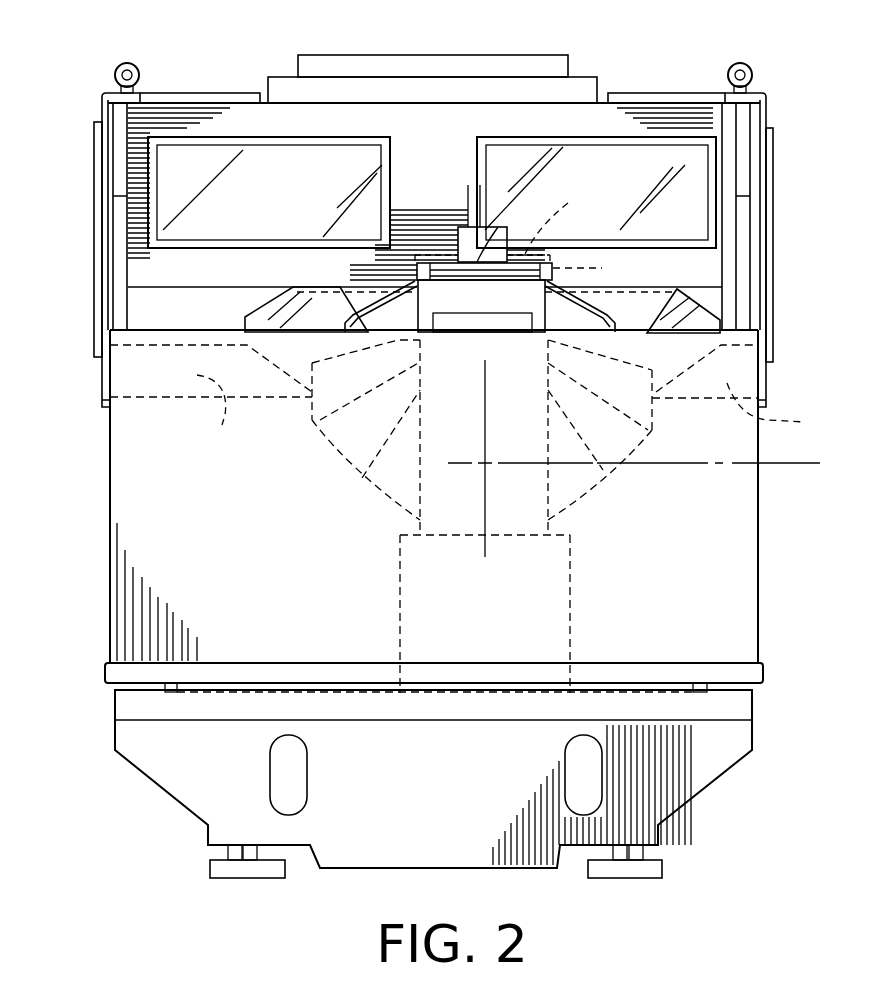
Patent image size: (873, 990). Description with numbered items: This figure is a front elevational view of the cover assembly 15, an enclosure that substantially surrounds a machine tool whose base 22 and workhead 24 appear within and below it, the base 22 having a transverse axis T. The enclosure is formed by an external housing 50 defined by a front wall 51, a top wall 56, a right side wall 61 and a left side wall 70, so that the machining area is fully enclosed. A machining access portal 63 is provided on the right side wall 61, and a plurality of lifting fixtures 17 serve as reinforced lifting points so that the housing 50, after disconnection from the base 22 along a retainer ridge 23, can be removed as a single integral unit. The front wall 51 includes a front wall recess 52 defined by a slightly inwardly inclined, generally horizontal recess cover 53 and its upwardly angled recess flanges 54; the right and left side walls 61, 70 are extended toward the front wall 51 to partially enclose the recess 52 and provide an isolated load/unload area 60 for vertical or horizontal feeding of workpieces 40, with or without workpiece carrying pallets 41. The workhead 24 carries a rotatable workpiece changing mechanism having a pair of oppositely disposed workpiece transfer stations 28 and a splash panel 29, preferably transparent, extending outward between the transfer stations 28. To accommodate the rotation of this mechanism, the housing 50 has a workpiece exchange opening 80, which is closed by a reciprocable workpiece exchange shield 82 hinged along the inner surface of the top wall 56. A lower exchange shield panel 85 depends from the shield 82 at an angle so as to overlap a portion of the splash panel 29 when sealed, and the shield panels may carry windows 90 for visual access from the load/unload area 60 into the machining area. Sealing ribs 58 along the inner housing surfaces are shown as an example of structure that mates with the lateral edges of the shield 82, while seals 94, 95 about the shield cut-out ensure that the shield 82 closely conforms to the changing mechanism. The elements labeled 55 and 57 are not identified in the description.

The cover assembly 15 is at (784, 195).
The lifting fixtures 17 is at (122, 63).
The base 22 is at (738, 700).
The retainer ridge 23 is at (758, 662).
The workhead 24 is at (540, 520).
The workpiece transfer stations 28 is at (556, 240).
The splash panel 29 is at (313, 307).
The workpieces 40 is at (468, 227).
The workpiece carrying pallets 41 is at (485, 228).
The external housing 50 is at (88, 154).
The front wall 51 is at (135, 498).
The front wall recess 52 is at (730, 297).
The recess cover 53 is at (110, 390).
The recess flanges 54 is at (511, 411).
The support frame 55 is at (427, 303).
The top wall 56 is at (243, 93).
The cover block 57 is at (560, 72).
The sealing ribs 58 is at (123, 131).
The load/unload area 60 is at (730, 264).
The right side wall 61 is at (758, 550).
The machining access portal 63 is at (102, 194).
The left side wall 70 is at (110, 333).
The workpiece exchange opening 80 is at (160, 275).
The workpiece exchange shield 82 is at (424, 147).
The lower exchange shield panel 85 is at (192, 324).
The windows 90 is at (265, 200).
The seal 94 is at (562, 219).
The seal 95 is at (593, 268).
The transverse axis T is at (783, 463).